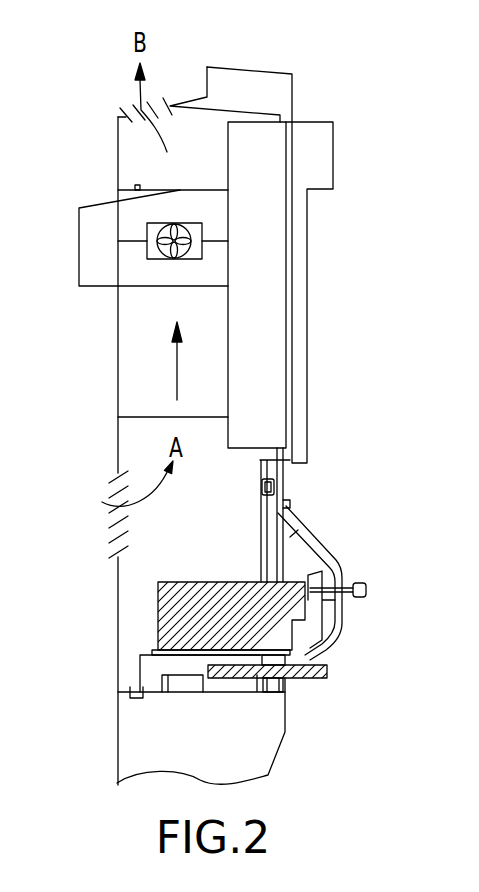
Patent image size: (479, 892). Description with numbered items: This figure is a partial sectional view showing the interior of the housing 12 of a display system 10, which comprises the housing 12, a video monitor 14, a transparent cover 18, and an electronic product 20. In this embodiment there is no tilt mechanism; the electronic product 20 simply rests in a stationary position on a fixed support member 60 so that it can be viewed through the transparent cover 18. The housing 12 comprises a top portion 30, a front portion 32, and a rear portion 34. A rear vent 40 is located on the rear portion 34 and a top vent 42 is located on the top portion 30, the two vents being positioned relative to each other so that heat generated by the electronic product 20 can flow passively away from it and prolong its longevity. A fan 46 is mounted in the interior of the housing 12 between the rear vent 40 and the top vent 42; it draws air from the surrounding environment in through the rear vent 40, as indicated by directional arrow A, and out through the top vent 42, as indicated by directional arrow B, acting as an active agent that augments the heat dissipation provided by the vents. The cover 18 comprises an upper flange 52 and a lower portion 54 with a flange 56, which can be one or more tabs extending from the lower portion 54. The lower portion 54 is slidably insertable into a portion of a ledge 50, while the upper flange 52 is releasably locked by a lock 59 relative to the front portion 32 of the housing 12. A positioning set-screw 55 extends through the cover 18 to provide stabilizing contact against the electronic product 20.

The display system 10 is at (384, 60).
The housing 12 is at (270, 231).
The video monitor 14 is at (301, 285).
The cover 18 is at (338, 574).
The electronic product 20 is at (197, 615).
The top portion 30 is at (225, 61).
The front portion 32 is at (316, 508).
The rear portion 34 is at (146, 301).
The rear vent 40 is at (86, 451).
The top vent 42 is at (105, 83).
The fan 46 is at (119, 246).
The ledge 50 is at (229, 729).
The upper flange 52 is at (318, 504).
The lower portion 54 is at (302, 657).
The positioning set-screw 55 is at (374, 589).
The flange 56 is at (243, 707).
The lock 59 is at (306, 479).
The fixed support member 60 is at (181, 687).